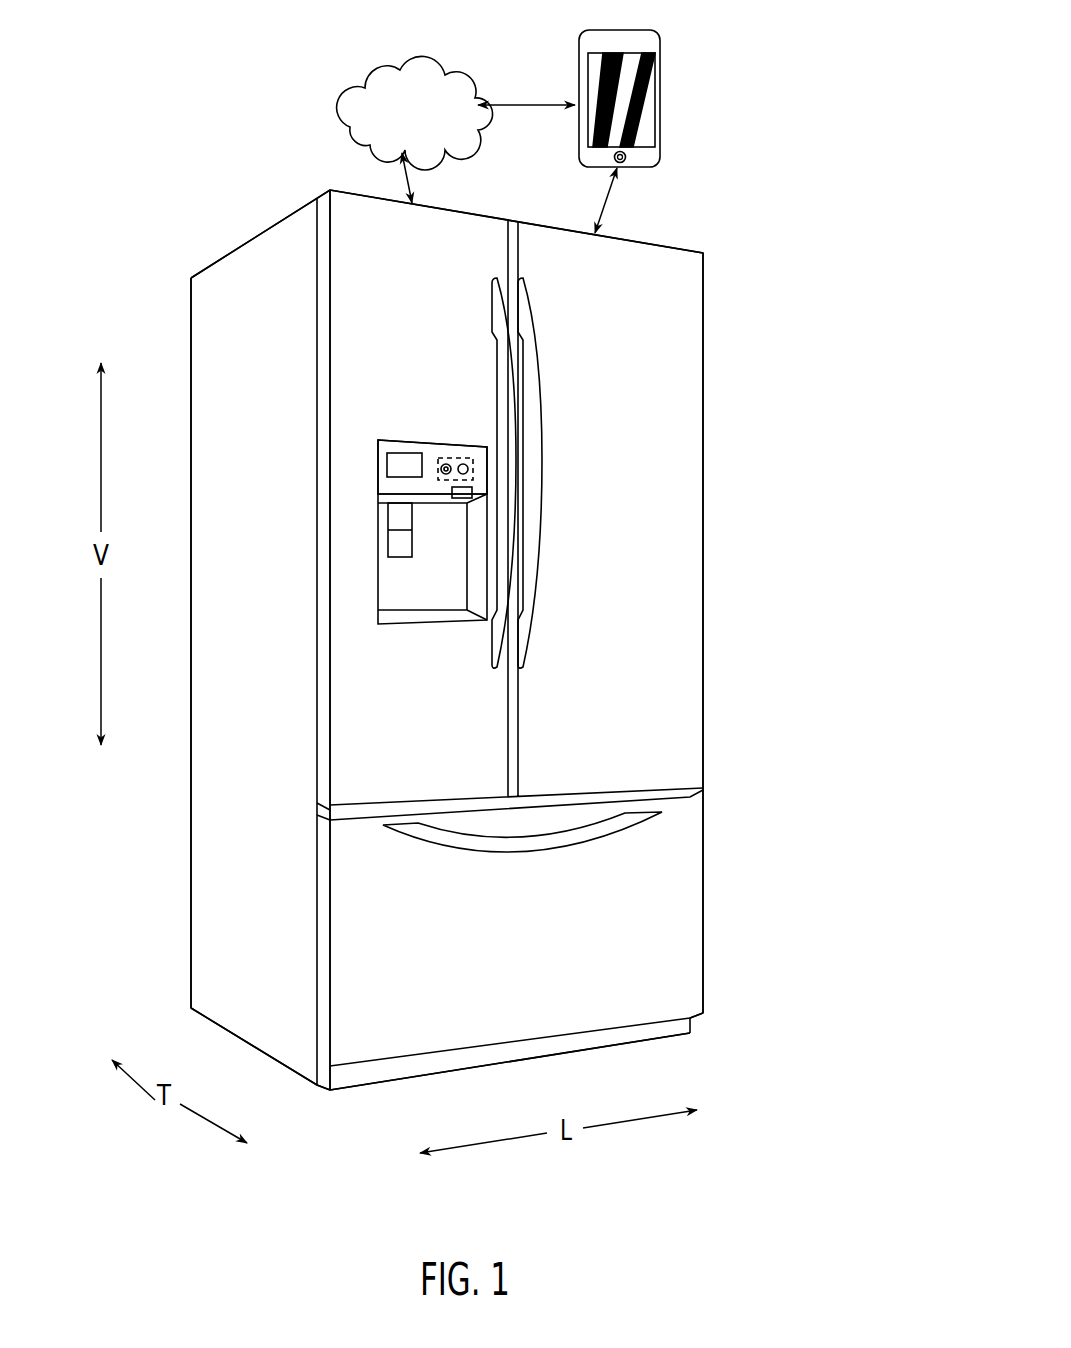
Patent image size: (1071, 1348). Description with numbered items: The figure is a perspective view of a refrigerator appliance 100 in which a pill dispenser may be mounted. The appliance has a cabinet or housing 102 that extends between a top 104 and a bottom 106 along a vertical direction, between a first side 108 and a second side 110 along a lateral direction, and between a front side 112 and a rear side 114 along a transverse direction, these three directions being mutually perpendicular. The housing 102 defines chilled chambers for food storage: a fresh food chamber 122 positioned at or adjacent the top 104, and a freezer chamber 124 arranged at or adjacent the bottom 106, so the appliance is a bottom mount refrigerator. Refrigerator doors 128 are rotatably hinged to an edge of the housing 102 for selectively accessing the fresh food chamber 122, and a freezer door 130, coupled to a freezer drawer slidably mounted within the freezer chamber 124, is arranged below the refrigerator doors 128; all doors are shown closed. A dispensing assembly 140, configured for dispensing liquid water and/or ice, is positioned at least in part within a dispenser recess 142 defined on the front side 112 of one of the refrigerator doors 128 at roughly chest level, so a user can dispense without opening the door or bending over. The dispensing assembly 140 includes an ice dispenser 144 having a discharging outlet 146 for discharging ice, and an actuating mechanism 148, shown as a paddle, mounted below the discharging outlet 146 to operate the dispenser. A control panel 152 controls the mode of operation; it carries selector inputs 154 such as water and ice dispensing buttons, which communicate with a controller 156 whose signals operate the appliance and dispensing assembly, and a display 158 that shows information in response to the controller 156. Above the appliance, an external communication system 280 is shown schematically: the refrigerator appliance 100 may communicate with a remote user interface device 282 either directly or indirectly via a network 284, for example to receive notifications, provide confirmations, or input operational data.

The refrigerator appliance 100 is at (693, 170).
The cabinet or housing 102 is at (268, 272).
The top 104 is at (188, 278).
The bottom 106 is at (188, 1006).
The first side 108 is at (328, 1094).
The second side 110 is at (688, 1040).
The front side 112 is at (315, 1090).
The rear side 114 is at (192, 1013).
The fresh food chamber 122 is at (730, 255).
The freezer chamber 124 is at (730, 795).
The refrigerator doors 128 is at (438, 321).
The freezer door 130 is at (567, 943).
The dispensing assembly 140 is at (387, 408).
The dispenser recess 142 is at (432, 613).
The ice dispenser 144 is at (382, 553).
The discharging outlet 146 is at (397, 502).
The actuating mechanism 148 is at (400, 548).
The control panel 152 is at (377, 461).
The selector inputs 154 is at (448, 462).
The controller 156 is at (477, 468).
The display 158 is at (405, 463).
The external communication system 280 is at (688, 73).
The remote user interface device 282 is at (645, 168).
The network 284 is at (430, 124).